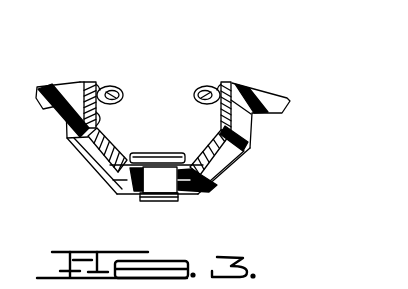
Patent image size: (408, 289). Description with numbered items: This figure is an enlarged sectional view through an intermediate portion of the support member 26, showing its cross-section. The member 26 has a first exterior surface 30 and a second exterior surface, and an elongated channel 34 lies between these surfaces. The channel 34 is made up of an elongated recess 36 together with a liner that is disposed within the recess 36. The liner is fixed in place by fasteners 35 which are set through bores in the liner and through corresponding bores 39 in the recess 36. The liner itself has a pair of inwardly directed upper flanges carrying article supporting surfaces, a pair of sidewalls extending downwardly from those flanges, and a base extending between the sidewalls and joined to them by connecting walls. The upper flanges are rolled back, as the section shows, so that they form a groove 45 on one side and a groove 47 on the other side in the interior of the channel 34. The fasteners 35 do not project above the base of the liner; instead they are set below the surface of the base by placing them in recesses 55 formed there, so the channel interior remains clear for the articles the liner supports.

The member 26 is at (263, 152).
The first exterior surface 30 is at (50, 85).
The elongated channel 34 is at (162, 74).
The fasteners 35 is at (152, 200).
The elongated recess 36 is at (85, 137).
The bores in the recess 39 is at (157, 189).
The groove 45 is at (102, 84).
The groove 47 is at (230, 85).
The recesses 55 is at (123, 158).